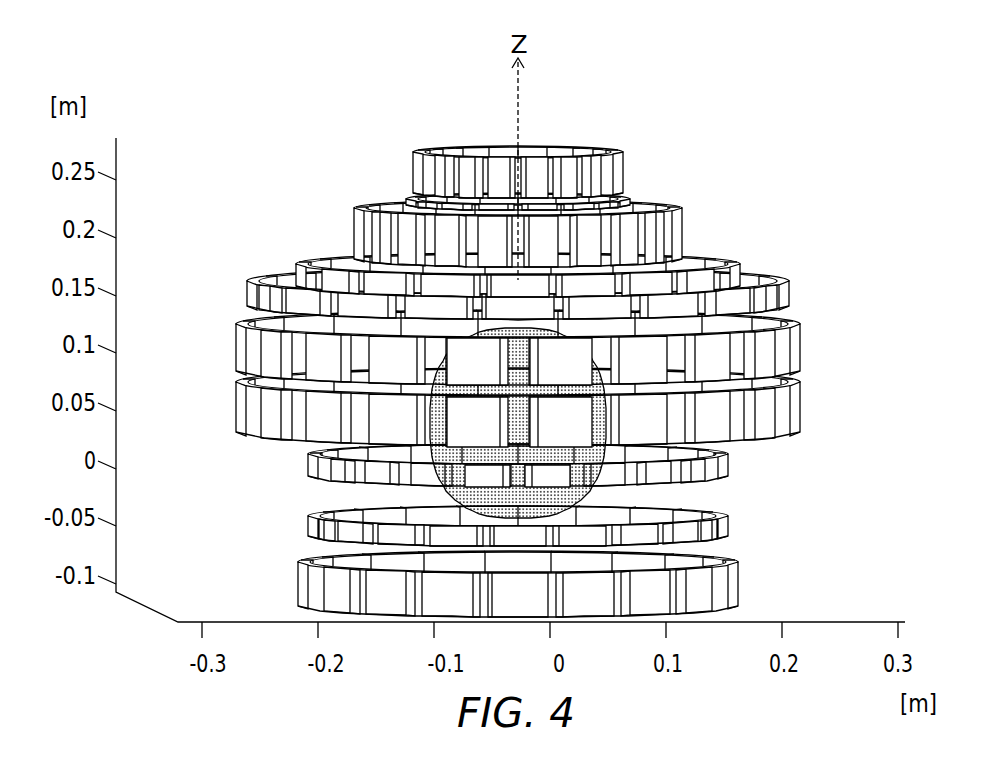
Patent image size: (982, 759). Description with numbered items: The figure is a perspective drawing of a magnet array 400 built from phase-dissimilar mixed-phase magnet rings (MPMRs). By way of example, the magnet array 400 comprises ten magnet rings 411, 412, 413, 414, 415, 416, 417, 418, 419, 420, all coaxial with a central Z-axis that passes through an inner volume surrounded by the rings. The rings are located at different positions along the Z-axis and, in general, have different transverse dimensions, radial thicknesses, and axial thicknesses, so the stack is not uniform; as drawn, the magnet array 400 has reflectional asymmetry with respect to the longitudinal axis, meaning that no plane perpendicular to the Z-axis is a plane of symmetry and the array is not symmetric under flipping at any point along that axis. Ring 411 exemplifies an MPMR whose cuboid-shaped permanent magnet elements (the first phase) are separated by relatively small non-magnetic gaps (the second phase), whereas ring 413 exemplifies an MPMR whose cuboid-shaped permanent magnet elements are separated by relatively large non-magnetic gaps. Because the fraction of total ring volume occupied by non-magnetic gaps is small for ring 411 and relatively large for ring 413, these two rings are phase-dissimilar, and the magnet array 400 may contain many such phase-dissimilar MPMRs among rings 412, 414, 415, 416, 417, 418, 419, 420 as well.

The magnet array 400 is at (282, 150).
The magnet ring 411 is at (740, 581).
The magnet ring 412 is at (728, 525).
The magnet ring 413 is at (728, 466).
The magnet ring 414 is at (802, 409).
The magnet ring 415 is at (802, 349).
The magnet ring 416 is at (788, 287).
The magnet ring 417 is at (736, 268).
The magnet ring 418 is at (686, 231).
The magnet ring 419 is at (630, 200).
The magnet ring 420 is at (624, 172).